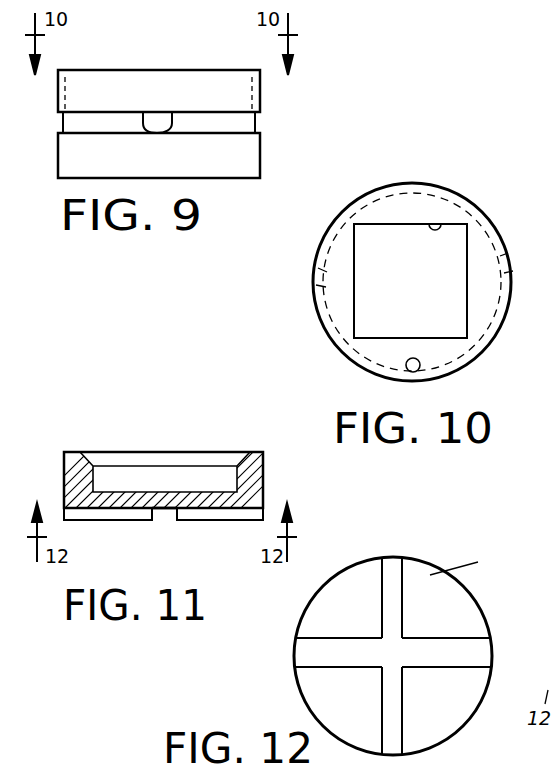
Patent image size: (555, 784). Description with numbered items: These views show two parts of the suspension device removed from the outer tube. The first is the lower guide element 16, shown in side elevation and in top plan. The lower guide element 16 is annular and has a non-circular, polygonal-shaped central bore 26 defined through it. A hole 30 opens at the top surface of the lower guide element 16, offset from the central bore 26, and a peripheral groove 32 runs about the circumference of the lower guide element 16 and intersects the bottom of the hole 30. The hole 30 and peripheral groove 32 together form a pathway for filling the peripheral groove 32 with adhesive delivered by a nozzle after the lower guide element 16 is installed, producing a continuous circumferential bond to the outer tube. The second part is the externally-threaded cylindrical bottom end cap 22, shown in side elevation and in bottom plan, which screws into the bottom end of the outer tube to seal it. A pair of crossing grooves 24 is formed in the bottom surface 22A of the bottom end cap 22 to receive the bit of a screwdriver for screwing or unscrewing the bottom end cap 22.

In FIG. 9, the lower guide element 16 is at (131, 66).
In FIG. 10, the lower guide element 16 is at (415, 179).
In FIG. 9, the hole 30 is at (158, 120).
In FIG. 10, the hole 30 is at (420, 366).
In FIG. 9, the peripheral groove 32 is at (260, 101).
In FIG. 10, the peripheral groove 32 is at (313, 275).
In FIG. 10, the central bore 26 is at (437, 229).
In FIG. 11, the bottom end cap 22 is at (201, 446).
In FIG. 12, the bottom end cap 22 is at (410, 554).
In FIG. 11, the bottom surface 22A is at (75, 453).
In FIG. 12, the bottom surface 22A is at (475, 567).
In FIG. 11, the crossing grooves 24 is at (162, 512).
In FIG. 12, the crossing grooves 24 is at (441, 648).